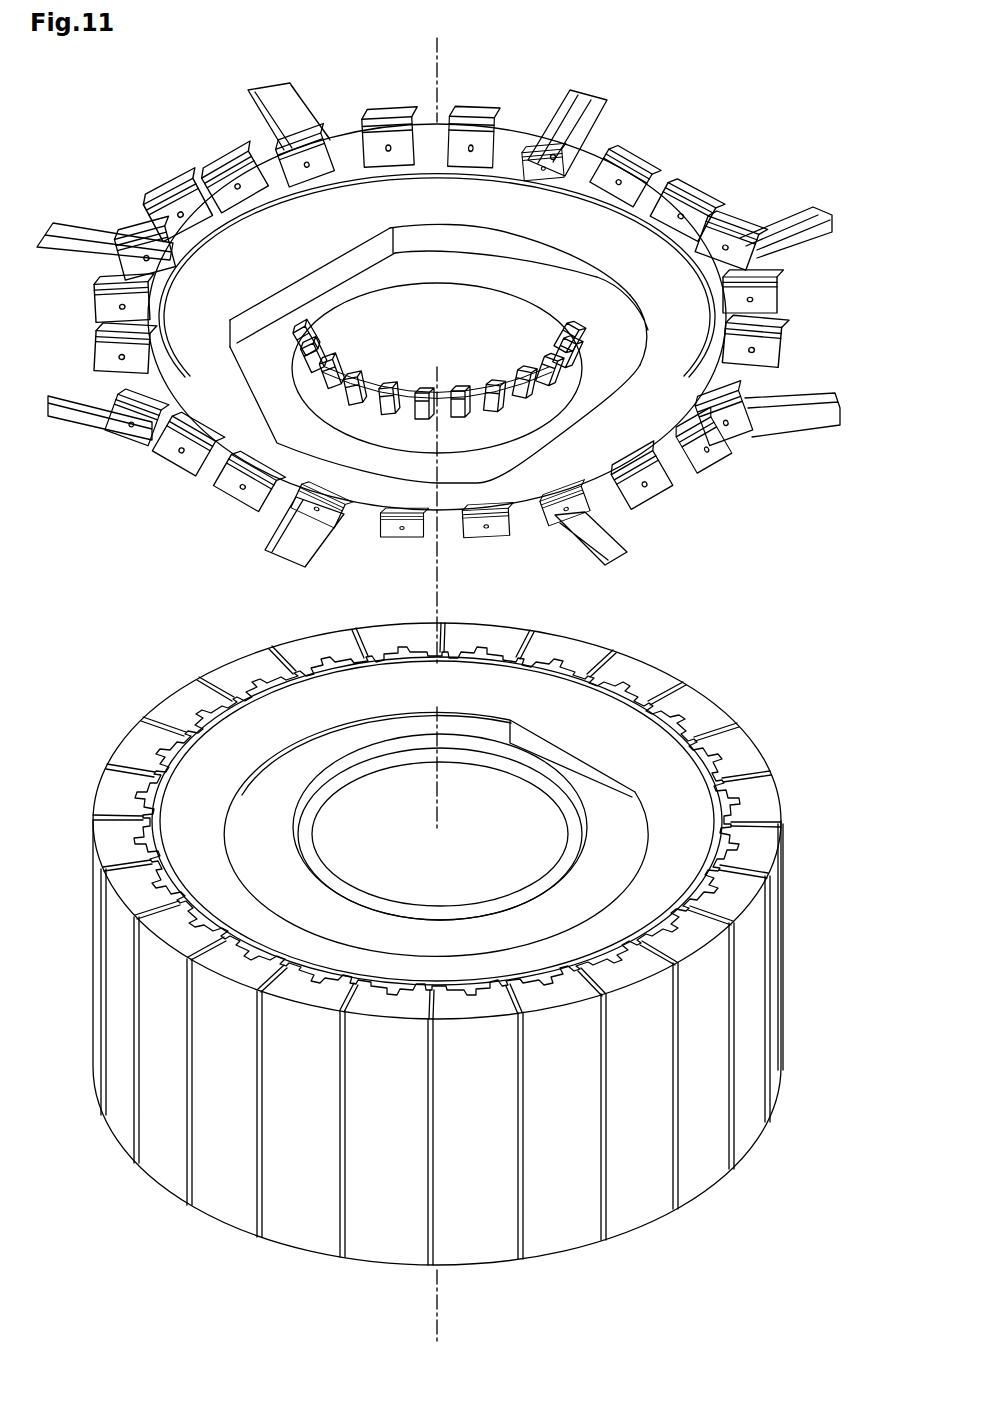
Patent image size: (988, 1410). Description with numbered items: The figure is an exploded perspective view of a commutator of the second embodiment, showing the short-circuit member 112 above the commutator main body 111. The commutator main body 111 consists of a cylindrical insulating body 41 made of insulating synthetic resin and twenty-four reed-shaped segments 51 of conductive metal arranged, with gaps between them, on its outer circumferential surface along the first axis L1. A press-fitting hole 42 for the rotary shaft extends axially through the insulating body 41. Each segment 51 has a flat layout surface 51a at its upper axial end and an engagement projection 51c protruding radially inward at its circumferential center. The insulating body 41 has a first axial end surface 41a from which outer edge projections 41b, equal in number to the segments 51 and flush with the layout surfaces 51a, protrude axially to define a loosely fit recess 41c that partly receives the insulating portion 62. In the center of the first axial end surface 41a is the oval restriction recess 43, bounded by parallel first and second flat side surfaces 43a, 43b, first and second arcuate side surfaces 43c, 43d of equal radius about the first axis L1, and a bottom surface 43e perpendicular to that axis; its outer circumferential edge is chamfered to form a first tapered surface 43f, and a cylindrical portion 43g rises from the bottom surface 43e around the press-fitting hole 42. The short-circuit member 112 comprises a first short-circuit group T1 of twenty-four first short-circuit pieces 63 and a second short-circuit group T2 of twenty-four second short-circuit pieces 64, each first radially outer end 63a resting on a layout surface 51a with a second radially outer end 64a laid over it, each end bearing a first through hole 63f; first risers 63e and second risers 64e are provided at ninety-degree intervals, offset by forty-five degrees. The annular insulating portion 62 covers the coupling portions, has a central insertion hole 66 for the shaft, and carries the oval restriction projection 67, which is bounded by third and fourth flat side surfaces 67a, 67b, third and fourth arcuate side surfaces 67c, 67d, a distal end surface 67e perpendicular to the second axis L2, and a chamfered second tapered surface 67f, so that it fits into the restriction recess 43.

The commutator main body 111 is at (93, 969).
The short-circuit member 112 is at (145, 171).
The insulating body 41 is at (663, 737).
The first axial end surface 41a is at (480, 680).
The outer edge projection 41b is at (727, 770).
The loosely fit recess 41c is at (553, 687).
The press-fitting hole 42 is at (540, 830).
The restriction recess 43 is at (260, 880).
The first flat side surface 43a is at (547, 757).
The second flat side surface 43b is at (340, 950).
The first arcuate side surface 43c is at (627, 870).
The second arcuate side surface 43d is at (348, 733).
The bottom surface 43e is at (295, 790).
The first tapered surface 43f is at (570, 755).
The cylindrical portion 43g is at (543, 903).
The segment 51 is at (285, 1228).
The layout surface 51a is at (640, 660).
The engagement projection 51c is at (720, 840).
The insulating portion 62 is at (350, 142).
The first short-circuit piece 63 is at (602, 148).
The first radially outer end 63a is at (247, 200).
The first riser 63e is at (800, 430).
The first through hole 63f is at (697, 226).
The second short-circuit piece 64 is at (485, 117).
The second radially outer end 64a is at (695, 182).
The second riser 64e is at (88, 430).
The insertion hole 66 is at (323, 390).
The restriction projection 67 is at (593, 317).
The third flat side surface 67a is at (587, 420).
The fourth flat side surface 67b is at (337, 263).
The third arcuate side surface 67c is at (507, 215).
The fourth arcuate side surface 67d is at (277, 443).
The distal end surface 67e is at (250, 352).
The second tapered surface 67f is at (587, 283).
The first short-circuit group T1 is at (595, 90).
The second short-circuit group T2 is at (470, 113).
The first axis L1 is at (442, 1328).
The second axis L2 is at (445, 47).